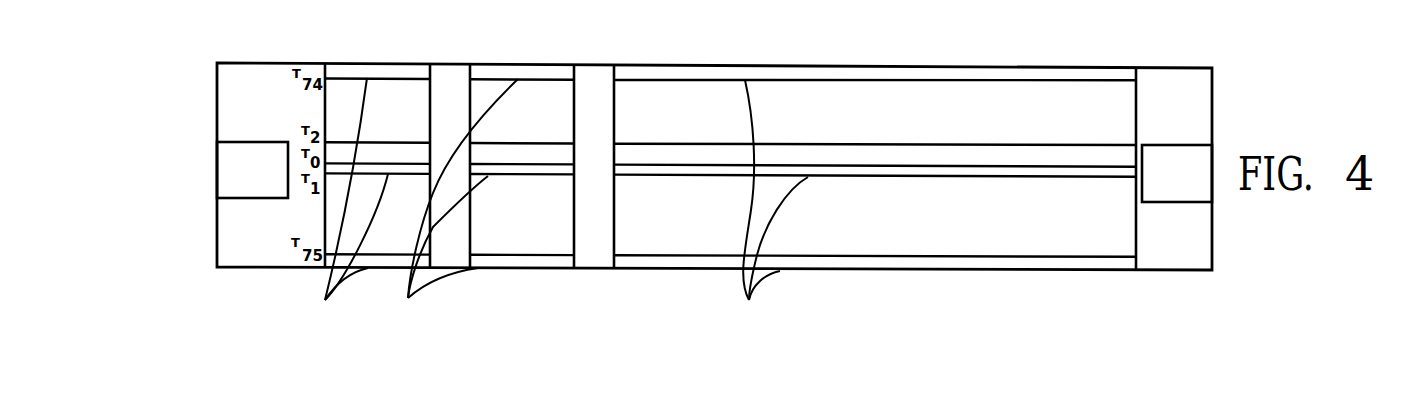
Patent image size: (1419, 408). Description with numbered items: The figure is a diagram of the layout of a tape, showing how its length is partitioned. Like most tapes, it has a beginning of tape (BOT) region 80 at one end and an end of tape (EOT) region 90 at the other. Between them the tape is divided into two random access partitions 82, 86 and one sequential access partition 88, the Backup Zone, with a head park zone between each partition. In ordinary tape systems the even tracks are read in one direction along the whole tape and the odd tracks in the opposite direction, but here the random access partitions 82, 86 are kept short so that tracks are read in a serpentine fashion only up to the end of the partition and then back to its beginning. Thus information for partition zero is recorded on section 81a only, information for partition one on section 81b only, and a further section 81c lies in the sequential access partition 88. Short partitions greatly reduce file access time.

The beginning of tape (BOT) region 80 is at (263, 63).
The random access partition 82 is at (388, 63).
The random access partition 86 is at (532, 63).
The sequential access partition 88 is at (823, 66).
The end of tape (EOT) region 90 is at (1160, 67).
The section 81a is at (345, 203).
The section 81b is at (456, 203).
The section 81c is at (771, 204).